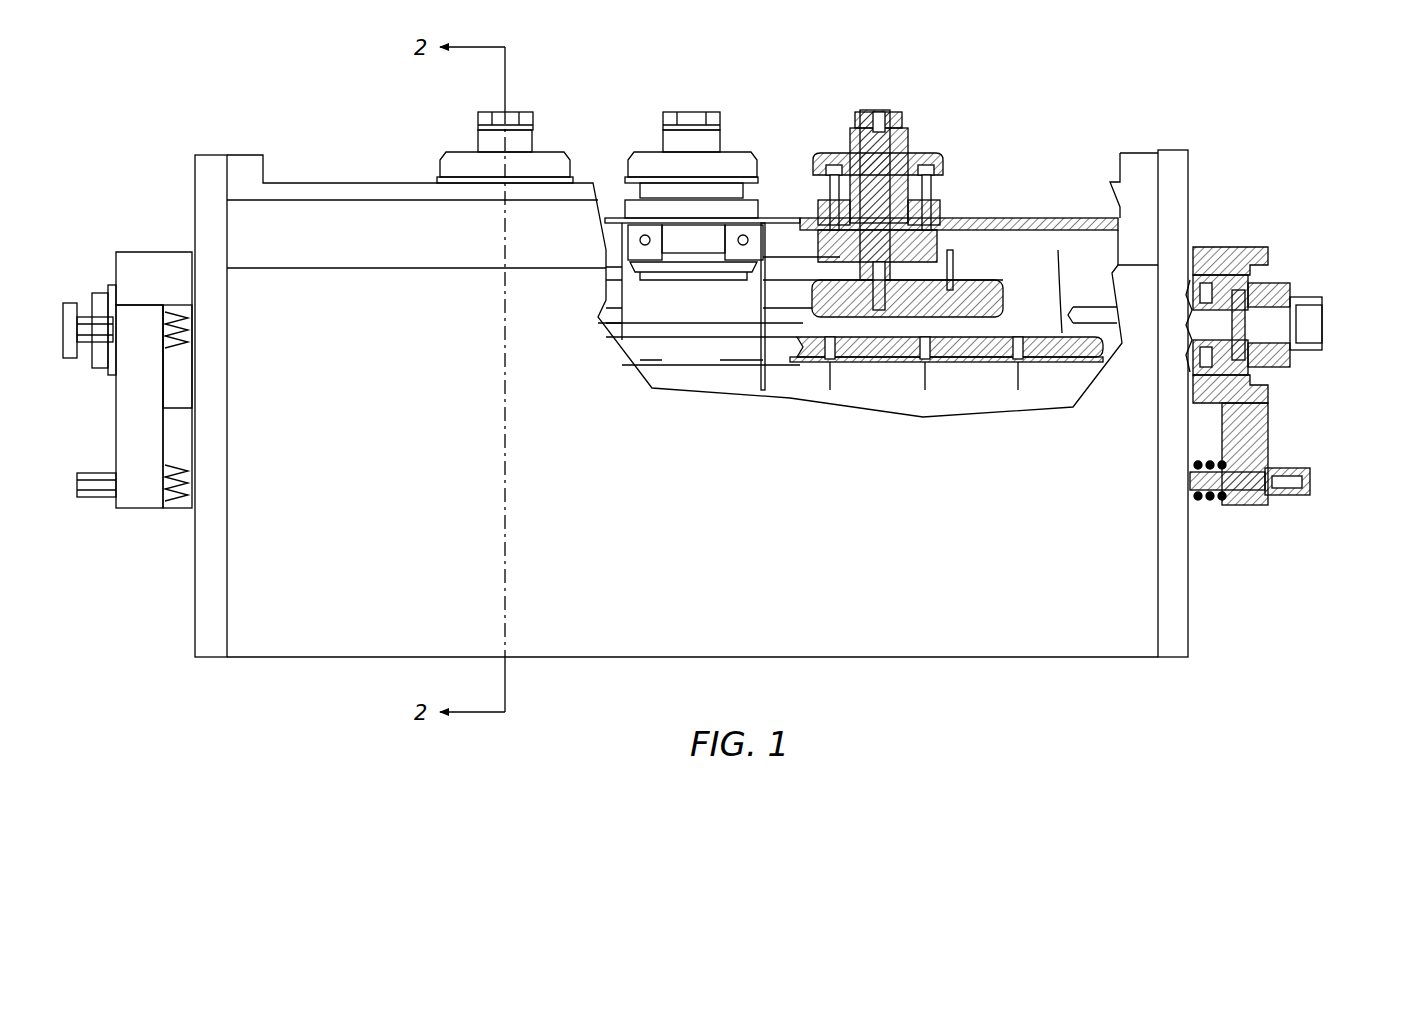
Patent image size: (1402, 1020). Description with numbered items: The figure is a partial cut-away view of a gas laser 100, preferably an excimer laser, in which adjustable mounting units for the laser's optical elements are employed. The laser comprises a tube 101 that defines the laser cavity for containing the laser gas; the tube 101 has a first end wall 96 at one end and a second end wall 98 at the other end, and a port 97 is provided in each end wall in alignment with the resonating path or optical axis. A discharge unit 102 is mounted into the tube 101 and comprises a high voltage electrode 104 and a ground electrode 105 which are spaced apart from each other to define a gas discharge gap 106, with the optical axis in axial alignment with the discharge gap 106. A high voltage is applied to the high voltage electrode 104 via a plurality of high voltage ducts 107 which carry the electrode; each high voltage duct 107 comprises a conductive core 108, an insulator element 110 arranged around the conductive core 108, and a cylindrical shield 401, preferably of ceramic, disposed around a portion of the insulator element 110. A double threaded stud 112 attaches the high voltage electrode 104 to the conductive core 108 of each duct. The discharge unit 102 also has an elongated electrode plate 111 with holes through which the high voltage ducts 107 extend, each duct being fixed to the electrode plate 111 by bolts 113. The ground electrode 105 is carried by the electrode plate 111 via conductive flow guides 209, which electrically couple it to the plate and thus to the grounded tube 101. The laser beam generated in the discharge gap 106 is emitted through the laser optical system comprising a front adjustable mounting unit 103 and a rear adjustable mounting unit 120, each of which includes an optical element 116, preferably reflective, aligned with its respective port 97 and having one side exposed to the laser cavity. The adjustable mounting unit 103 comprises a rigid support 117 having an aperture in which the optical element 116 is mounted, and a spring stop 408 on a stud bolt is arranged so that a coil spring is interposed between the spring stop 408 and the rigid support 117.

The gas laser 100 is at (313, 148).
The tube 101 is at (382, 466).
The discharge unit 102 is at (612, 143).
The front adjustable mounting unit 103 is at (1250, 245).
The high voltage electrode 104 is at (977, 297).
The ground electrode 105 is at (1055, 340).
The gas discharge gap 106 is at (1048, 333).
The high voltage duct 107 is at (642, 152).
The conductive core 108 is at (877, 110).
The insulator element 110 is at (812, 205).
The electrode plate 111 is at (1122, 225).
The double threaded stud 112 is at (950, 228).
The bolts 113 is at (832, 190).
The optical element 116 is at (1245, 318).
The rigid support 117 is at (116, 450).
The rear adjustable mounting unit 120 is at (150, 248).
The first end wall 96 is at (1176, 622).
The port 97 is at (1195, 318).
The second end wall 98 is at (207, 597).
The flow guides 209 is at (760, 330).
The cylindrical shield 401 is at (848, 140).
The spring stop 408 is at (90, 305).